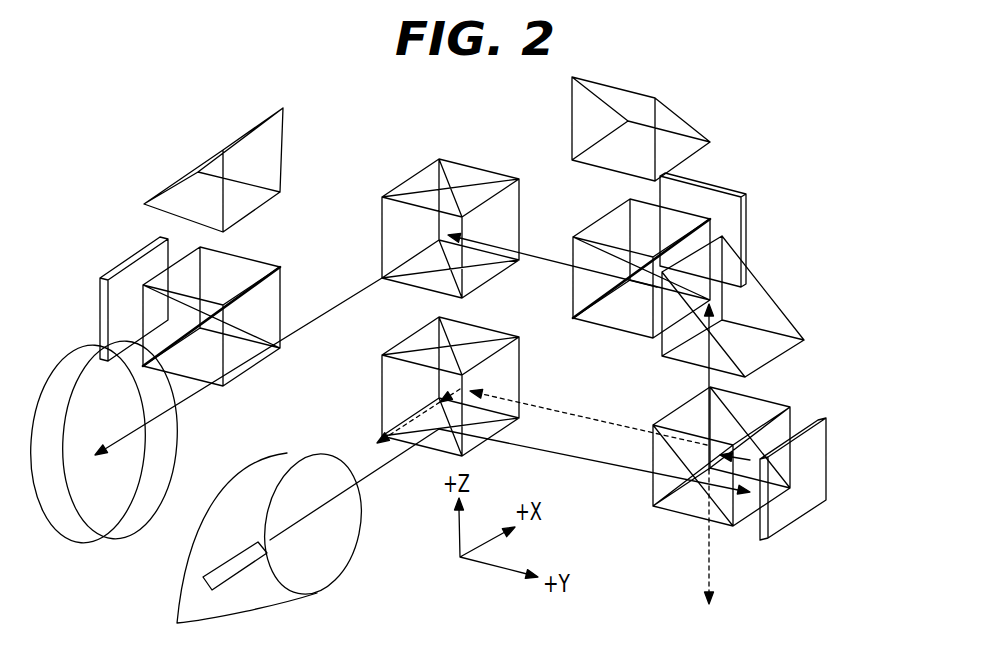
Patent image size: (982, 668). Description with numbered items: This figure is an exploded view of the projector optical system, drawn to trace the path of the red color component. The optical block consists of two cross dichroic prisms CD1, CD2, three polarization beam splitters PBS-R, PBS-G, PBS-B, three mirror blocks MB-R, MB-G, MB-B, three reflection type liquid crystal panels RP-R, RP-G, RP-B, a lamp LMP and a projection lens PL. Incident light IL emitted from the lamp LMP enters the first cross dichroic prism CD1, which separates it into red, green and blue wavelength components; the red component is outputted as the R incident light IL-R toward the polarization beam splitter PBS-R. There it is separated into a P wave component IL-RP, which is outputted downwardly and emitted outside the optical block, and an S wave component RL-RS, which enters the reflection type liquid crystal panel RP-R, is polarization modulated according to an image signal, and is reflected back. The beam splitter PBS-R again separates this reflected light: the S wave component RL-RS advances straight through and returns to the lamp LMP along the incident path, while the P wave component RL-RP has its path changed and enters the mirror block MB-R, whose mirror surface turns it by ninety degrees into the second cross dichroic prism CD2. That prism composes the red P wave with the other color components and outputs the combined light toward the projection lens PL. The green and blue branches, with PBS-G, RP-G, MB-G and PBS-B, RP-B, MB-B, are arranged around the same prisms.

The projection lens PL is at (80, 543).
The lamp LMP is at (307, 597).
The incident light IL is at (365, 480).
The first cross dichroic prism CD1 is at (402, 352).
The second cross dichroic prism CD2 is at (460, 162).
The polarization beam splitter for G PBS-G is at (258, 372).
The reflection type liquid crystal panel for G RP-G is at (115, 273).
The mirror block for G MB-G is at (281, 128).
The polarization beam splitter for B PBS-B is at (600, 328).
The reflection type liquid crystal panel for B RP-B is at (747, 237).
The mirror block for B MB-B is at (693, 158).
The polarization beam splitter for R PBS-R is at (648, 497).
The reflection type liquid crystal panel for R RP-R is at (803, 520).
The mirror block for R MB-R is at (783, 357).
The R incident light IL-R is at (570, 447).
The P wave component of R incident light IL-RP is at (708, 473).
The P wave component of reflected light RL-RP is at (709, 378).
The S wave component RL-RS is at (620, 423).